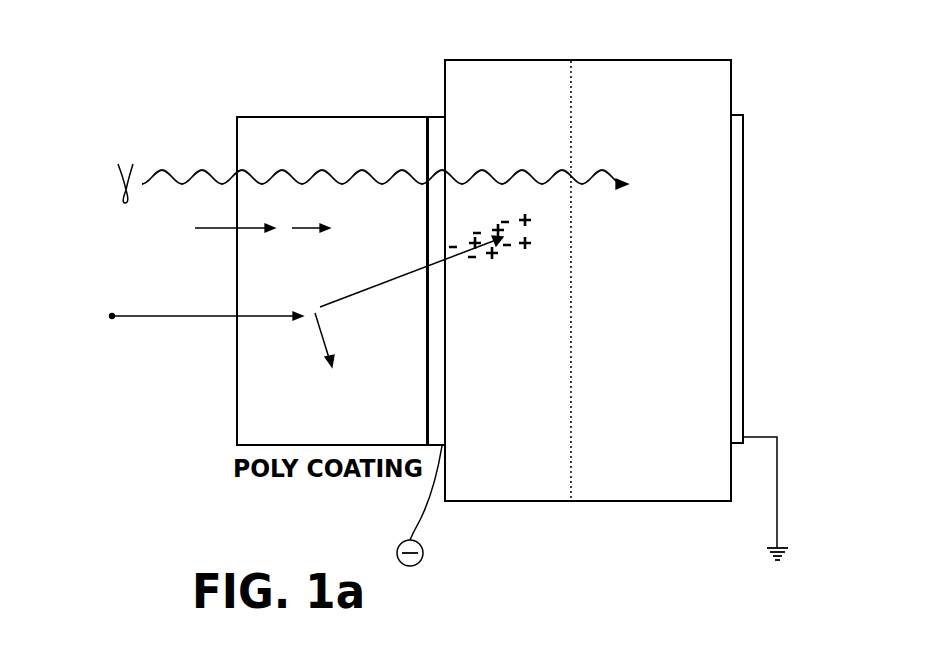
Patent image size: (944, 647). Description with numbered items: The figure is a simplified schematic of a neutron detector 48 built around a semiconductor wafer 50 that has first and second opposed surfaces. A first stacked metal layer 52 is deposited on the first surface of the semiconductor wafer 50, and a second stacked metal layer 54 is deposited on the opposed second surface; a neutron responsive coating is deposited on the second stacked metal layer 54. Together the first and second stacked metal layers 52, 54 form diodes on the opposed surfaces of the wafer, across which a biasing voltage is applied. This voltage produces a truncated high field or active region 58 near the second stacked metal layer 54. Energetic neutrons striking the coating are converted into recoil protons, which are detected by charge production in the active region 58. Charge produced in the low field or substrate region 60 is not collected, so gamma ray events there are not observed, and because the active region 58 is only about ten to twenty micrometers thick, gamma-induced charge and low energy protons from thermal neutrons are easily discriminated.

The neutron detector 48 is at (122, 414).
The semiconductor wafer 50 is at (738, 94).
The first stacked metal layer 52 is at (735, 180).
The second stacked metal layer 54 is at (428, 117).
The active region 58 is at (508, 85).
The low field region 60 is at (665, 95).